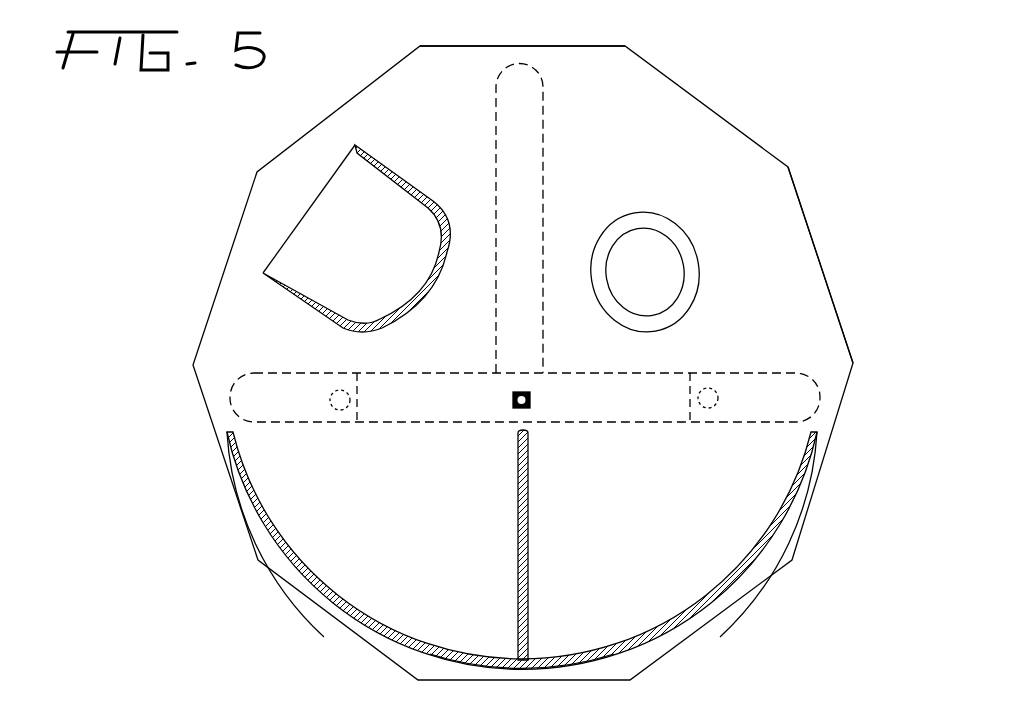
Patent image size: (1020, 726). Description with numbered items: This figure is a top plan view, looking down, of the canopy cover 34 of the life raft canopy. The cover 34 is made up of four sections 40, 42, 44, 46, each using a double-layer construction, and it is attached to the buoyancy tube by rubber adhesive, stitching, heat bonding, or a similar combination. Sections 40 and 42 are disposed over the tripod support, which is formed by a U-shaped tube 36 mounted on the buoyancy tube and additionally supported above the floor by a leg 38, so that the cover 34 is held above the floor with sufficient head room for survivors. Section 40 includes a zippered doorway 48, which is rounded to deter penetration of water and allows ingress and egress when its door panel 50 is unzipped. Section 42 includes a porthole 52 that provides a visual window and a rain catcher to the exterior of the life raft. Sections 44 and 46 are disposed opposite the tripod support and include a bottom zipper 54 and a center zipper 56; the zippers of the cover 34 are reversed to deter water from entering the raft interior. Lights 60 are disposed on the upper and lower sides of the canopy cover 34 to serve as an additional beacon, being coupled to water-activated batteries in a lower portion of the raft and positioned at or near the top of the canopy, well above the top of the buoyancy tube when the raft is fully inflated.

The canopy cover 34 is at (722, 77).
The U-shaped tube 36 is at (645, 410).
The leg 38 is at (525, 105).
The section 40 is at (436, 67).
The section 42 is at (782, 212).
The section 44 is at (762, 492).
The section 46 is at (342, 540).
The zippered doorway 48 is at (355, 148).
The door panel 50 is at (328, 240).
The porthole 52 is at (677, 222).
The bottom zipper 54 is at (627, 653).
The center zipper 56 is at (528, 517).
The lights 60 is at (522, 392).